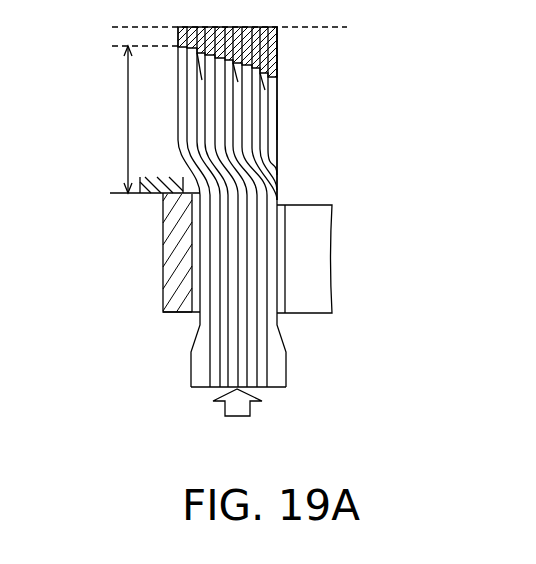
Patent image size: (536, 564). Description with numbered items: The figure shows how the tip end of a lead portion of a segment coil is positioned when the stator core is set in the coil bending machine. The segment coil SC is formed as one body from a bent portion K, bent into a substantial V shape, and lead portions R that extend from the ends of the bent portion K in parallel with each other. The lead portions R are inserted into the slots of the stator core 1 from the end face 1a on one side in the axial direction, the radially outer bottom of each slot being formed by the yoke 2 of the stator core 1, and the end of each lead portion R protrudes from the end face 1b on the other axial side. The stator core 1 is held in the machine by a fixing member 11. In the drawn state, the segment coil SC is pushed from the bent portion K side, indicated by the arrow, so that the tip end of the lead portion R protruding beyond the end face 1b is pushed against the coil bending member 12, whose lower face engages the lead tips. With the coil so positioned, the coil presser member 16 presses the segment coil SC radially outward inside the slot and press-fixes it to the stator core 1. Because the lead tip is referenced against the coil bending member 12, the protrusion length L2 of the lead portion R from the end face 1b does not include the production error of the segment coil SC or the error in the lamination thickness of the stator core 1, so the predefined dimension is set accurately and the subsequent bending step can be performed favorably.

The coil bending member 12 is at (291, 58).
The lead portion R is at (277, 108).
The segment coil SC is at (279, 142).
The protrusion length L2 is at (135, 119).
The fixing member 11 is at (150, 196).
The end face on the other side 1b is at (173, 178).
The stator core 1 is at (161, 257).
The yoke 2 is at (172, 293).
The end face on one side 1a is at (175, 313).
The coil presser member 16 is at (325, 228).
The bent portion K is at (213, 388).